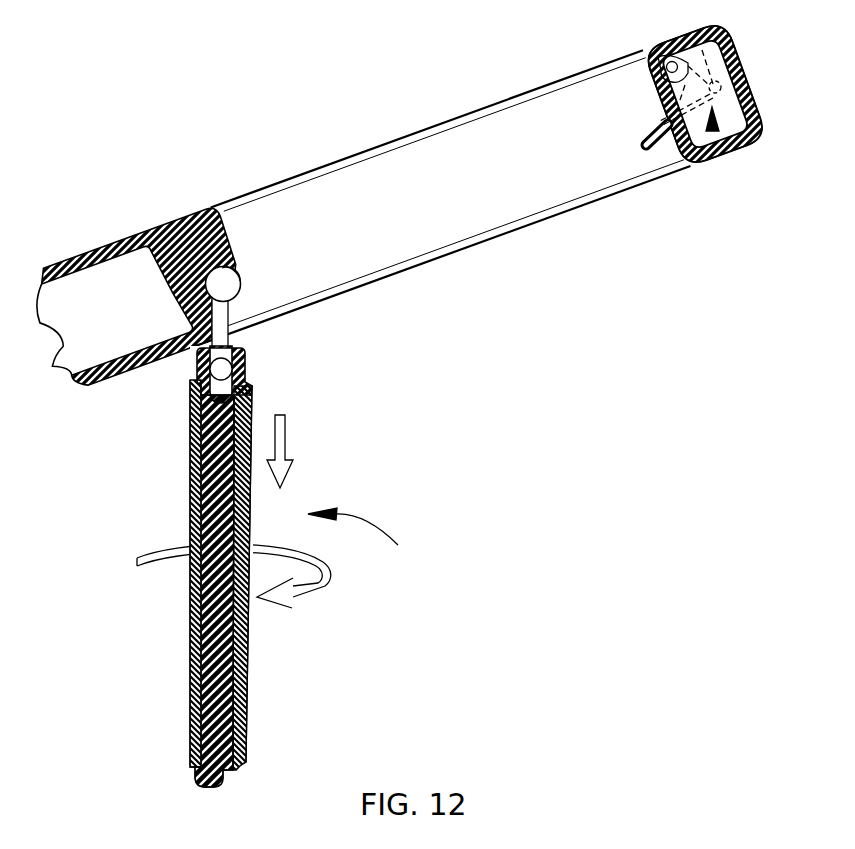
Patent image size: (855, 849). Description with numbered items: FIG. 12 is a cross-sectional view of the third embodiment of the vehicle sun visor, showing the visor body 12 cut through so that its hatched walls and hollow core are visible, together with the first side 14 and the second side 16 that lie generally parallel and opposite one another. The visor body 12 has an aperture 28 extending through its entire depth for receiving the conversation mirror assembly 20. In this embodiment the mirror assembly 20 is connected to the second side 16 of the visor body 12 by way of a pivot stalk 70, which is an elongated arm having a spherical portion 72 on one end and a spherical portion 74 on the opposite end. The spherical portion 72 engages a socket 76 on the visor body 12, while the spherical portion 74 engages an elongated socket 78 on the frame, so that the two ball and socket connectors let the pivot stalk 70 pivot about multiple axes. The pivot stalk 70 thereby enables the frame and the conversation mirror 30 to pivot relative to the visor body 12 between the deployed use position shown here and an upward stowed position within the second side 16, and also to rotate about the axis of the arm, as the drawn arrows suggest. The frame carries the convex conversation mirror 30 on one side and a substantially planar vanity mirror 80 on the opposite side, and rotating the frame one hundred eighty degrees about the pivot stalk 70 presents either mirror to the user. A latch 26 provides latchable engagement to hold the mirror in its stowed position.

The visor body 12 is at (172, 218).
The first side 14 is at (737, 143).
The second side 16 is at (667, 46).
The conversation mirror assembly 20 is at (369, 538).
The latch 26 is at (724, 138).
The aperture 28 is at (430, 210).
The conversation mirror 30 is at (253, 645).
The pivot stalk 70 is at (222, 323).
The spherical portion 72 is at (232, 292).
The spherical portion 74 is at (235, 363).
The socket 76 is at (226, 287).
The elongated socket 78 is at (218, 392).
The vanity mirror 80 is at (190, 591).